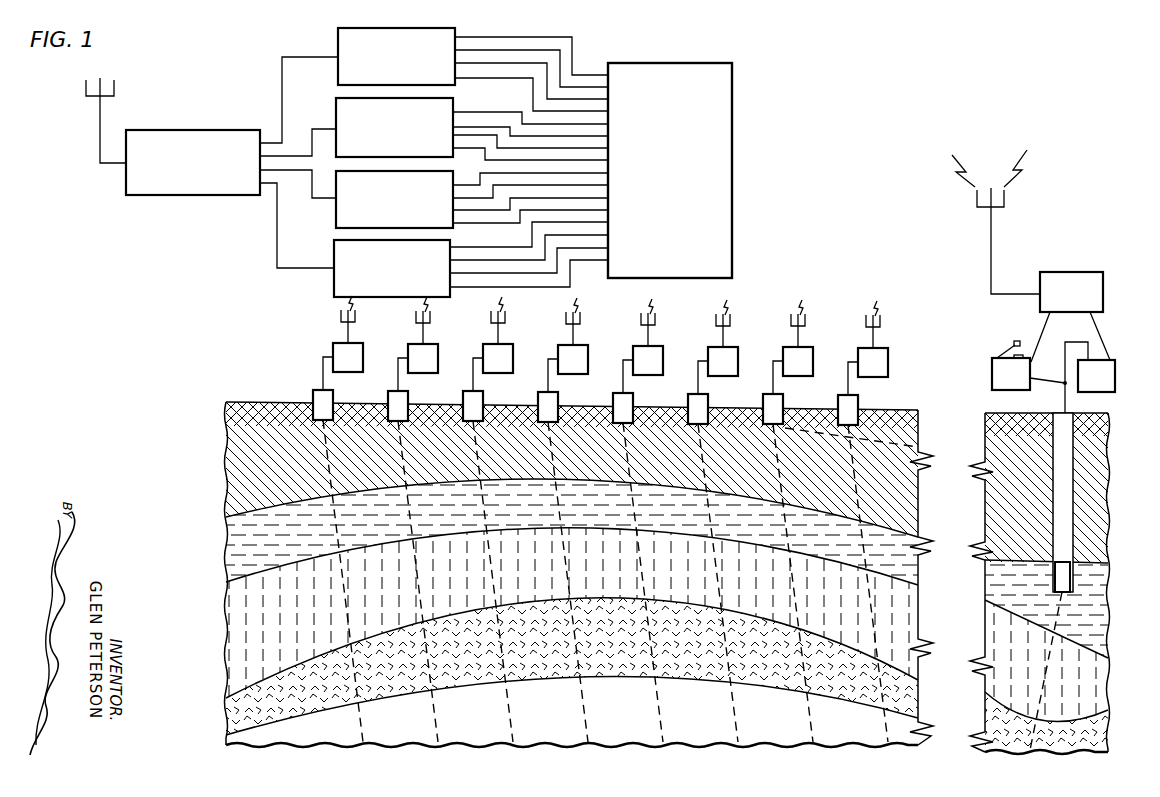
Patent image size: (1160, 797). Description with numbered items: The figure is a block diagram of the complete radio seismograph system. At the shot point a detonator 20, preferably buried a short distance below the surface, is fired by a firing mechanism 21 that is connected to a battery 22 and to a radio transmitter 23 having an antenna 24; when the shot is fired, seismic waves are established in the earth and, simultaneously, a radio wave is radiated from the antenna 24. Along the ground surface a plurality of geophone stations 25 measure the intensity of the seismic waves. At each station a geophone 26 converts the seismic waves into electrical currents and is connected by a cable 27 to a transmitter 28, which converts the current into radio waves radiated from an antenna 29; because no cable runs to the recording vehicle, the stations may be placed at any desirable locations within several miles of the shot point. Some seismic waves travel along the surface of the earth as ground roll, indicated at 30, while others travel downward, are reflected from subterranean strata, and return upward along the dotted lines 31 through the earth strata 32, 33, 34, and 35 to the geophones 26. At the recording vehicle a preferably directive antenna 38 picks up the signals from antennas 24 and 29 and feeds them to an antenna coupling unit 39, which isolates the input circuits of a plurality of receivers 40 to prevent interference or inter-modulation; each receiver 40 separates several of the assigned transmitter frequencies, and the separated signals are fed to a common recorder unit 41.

The detonator 20 is at (1066, 578).
The firing mechanism 21 is at (992, 377).
The battery 22 is at (1115, 378).
The radio transmitter 23 is at (1067, 272).
The antenna 24 is at (988, 252).
The geophone stations 25 is at (310, 332).
The geophone 26 is at (388, 396).
The cable 27 is at (322, 382).
The transmitter 28 is at (363, 351).
The antenna 29 is at (352, 332).
The surface seismic waves 30 is at (905, 462).
The reflected seismic waves 31 is at (435, 714).
The earth stratum 32 is at (228, 722).
The earth stratum 33 is at (238, 640).
The earth stratum 34 is at (245, 550).
The earth stratum 35 is at (238, 462).
The antenna 38 is at (97, 118).
The antenna coupling unit 39 is at (126, 181).
The receivers 40 is at (338, 99).
The common recorder unit 41 is at (732, 143).